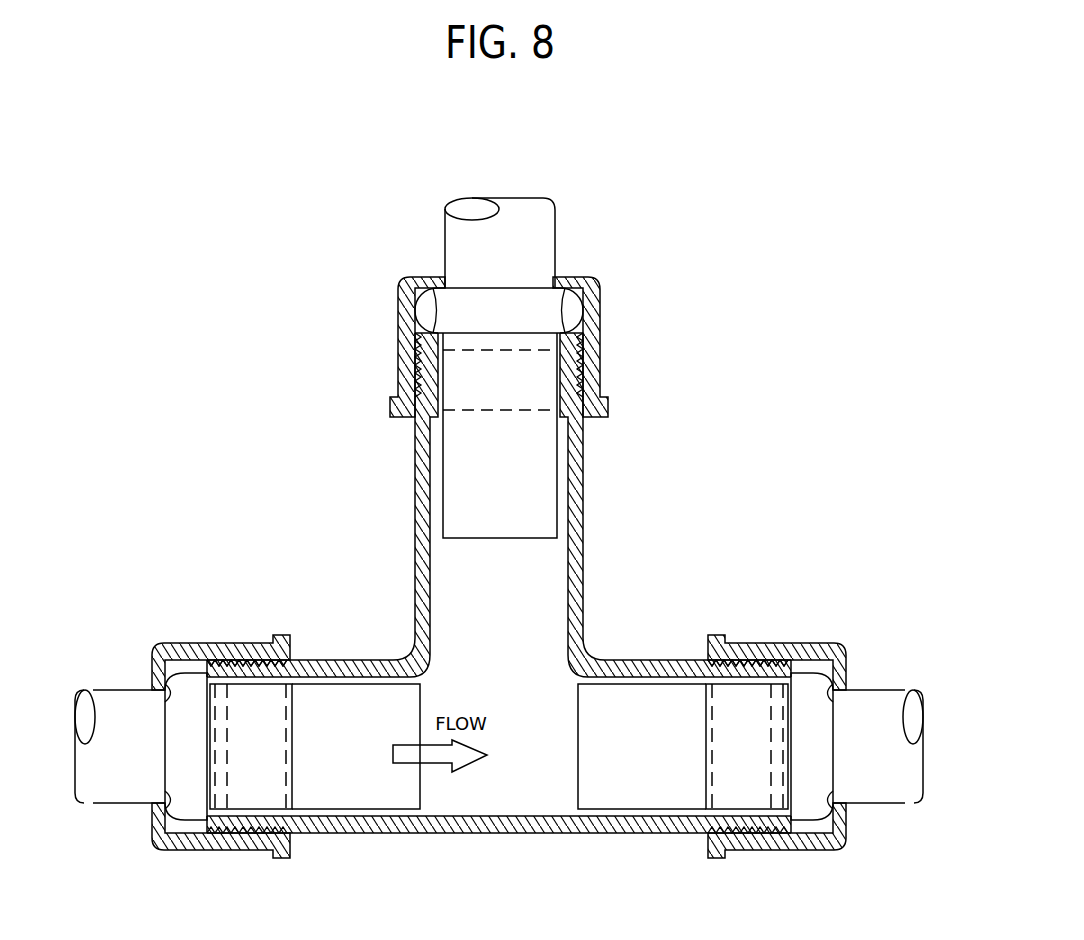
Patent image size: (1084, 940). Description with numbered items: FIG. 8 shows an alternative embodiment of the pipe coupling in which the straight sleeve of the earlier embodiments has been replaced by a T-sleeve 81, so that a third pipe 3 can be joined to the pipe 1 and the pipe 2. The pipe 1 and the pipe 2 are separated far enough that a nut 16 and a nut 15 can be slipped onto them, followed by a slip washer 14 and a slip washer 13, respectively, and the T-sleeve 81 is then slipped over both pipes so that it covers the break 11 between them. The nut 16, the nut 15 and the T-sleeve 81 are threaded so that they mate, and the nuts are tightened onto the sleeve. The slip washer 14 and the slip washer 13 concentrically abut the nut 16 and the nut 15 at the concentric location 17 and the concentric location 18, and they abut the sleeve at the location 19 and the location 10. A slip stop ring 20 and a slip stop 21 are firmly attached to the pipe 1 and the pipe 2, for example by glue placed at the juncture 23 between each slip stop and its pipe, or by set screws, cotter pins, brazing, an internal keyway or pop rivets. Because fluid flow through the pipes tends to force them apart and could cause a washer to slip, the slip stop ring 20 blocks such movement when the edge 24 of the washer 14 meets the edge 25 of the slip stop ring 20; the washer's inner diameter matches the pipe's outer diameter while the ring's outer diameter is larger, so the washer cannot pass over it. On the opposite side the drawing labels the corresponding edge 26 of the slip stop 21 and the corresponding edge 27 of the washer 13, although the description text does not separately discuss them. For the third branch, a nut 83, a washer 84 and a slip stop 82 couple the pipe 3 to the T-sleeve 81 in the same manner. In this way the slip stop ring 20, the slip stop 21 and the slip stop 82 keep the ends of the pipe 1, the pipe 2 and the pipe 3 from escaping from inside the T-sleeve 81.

The pipe 1 is at (100, 803).
The pipe 2 is at (897, 803).
The pipe 3 is at (556, 220).
The location 10 is at (795, 677).
The break 11 is at (484, 637).
The slip washer 13 is at (838, 777).
The slip washer 14 is at (160, 777).
The nut 15 is at (752, 850).
The nut 16 is at (255, 850).
The concentric location 17 is at (158, 715).
The concentric location 18 is at (838, 715).
The location 19 is at (203, 678).
The slip stop ring 20 is at (262, 747).
The slip stop 21 is at (737, 747).
The juncture 23 is at (322, 795).
The edge 24 is at (212, 737).
The edge 25 is at (217, 770).
The right sleeve lip 26 is at (779, 773).
The right sleeve groove 27 is at (784, 737).
The T-sleeve 81 is at (415, 550).
The slip stop 82 is at (487, 378).
The nut 83 is at (600, 372).
The washer 84 is at (527, 288).